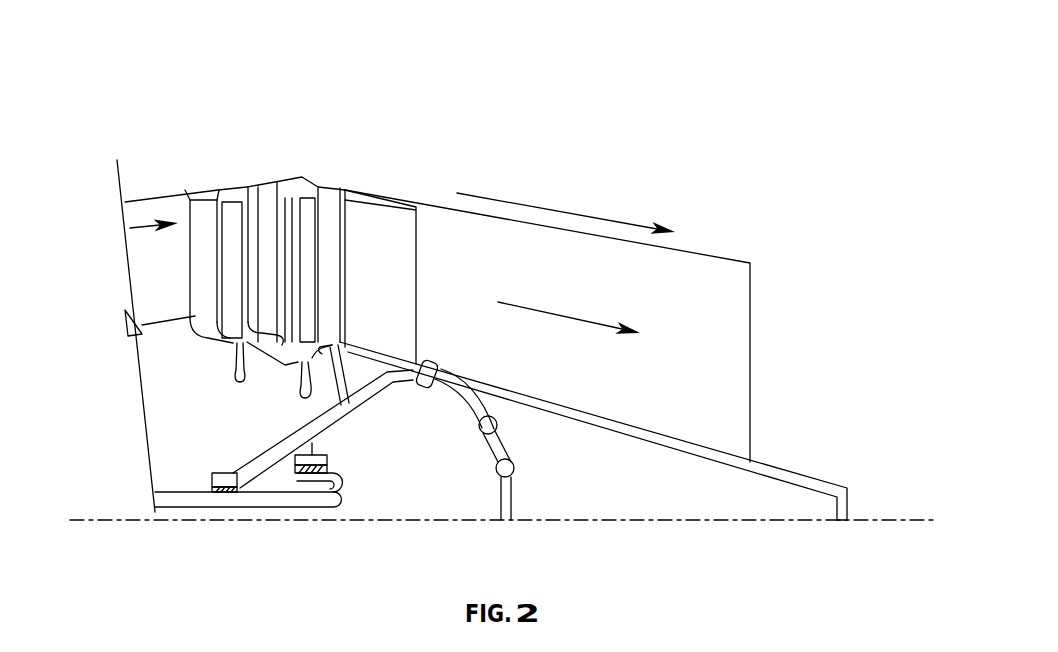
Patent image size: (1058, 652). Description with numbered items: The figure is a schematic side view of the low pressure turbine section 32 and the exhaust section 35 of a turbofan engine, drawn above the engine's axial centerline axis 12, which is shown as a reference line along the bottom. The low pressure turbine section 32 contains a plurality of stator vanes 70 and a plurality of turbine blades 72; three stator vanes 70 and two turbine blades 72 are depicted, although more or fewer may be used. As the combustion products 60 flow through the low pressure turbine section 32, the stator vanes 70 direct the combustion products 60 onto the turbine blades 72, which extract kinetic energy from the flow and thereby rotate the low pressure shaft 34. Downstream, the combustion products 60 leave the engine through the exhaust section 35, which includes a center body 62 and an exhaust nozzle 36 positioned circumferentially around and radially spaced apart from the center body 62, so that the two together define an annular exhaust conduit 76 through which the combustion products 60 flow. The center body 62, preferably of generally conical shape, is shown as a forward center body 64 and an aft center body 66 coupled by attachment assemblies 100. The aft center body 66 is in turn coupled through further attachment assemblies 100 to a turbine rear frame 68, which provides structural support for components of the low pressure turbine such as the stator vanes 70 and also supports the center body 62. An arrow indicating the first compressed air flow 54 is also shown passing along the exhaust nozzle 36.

The axial centerline axis 12 is at (883, 520).
The low pressure turbine section 32 is at (206, 94).
The low pressure shaft 34 is at (185, 495).
The exhaust section 35 is at (748, 167).
The exhaust nozzle 36 is at (683, 252).
The first compressed air flow 54 is at (523, 202).
The combustion products 60 is at (148, 218).
The center body 62 is at (839, 437).
The forward center body 64 is at (445, 373).
The aft center body 66 is at (740, 452).
The turbine rear frame 68 is at (377, 388).
The stator vanes 70 is at (258, 177).
The turbine blades 72 is at (305, 195).
The annular exhaust conduit 76 is at (726, 324).
The attachment assemblies 100 is at (427, 334).